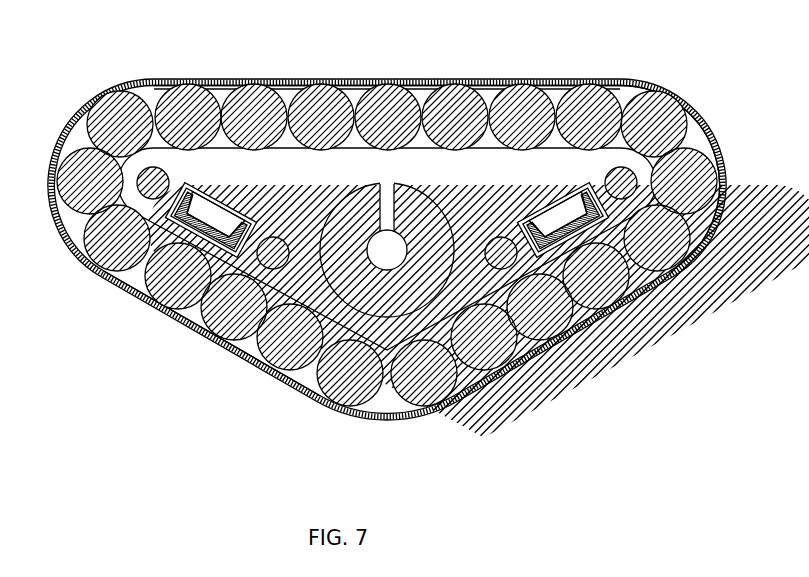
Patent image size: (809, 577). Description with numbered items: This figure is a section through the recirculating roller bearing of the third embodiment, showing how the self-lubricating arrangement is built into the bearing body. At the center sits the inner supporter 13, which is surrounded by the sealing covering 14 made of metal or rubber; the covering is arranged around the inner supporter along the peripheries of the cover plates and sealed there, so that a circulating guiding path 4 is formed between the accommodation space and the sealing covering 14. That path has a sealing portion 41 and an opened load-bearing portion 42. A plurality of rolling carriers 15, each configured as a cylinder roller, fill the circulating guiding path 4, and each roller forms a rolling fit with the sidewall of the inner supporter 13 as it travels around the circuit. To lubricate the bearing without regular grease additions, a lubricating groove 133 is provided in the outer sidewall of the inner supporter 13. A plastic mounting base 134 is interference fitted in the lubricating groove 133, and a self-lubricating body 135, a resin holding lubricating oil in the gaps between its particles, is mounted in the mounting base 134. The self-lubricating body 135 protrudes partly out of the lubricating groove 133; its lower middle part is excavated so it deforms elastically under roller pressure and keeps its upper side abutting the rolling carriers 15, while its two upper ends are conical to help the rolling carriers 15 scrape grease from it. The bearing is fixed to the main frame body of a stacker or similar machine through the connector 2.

The connector 2 is at (417, 290).
The circulating guiding path 4 is at (190, 325).
The inner supporter 13 is at (133, 273).
The sealing covering 14 is at (658, 86).
The rolling carrier 15 is at (517, 93).
The sealing portion 41 is at (235, 360).
The opened load-bearing portion 42 is at (361, 74).
The lubricating groove 133 is at (603, 218).
The mounting base 134 is at (603, 208).
The self-lubricating body 135 is at (581, 228).